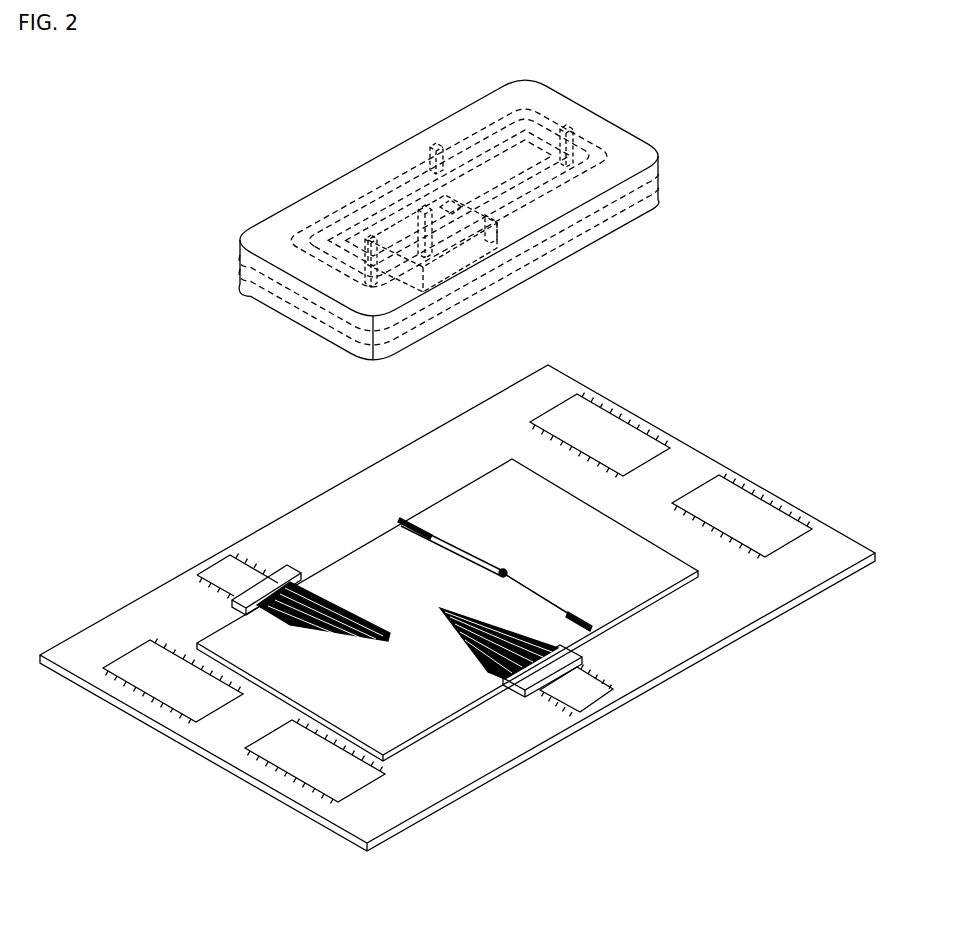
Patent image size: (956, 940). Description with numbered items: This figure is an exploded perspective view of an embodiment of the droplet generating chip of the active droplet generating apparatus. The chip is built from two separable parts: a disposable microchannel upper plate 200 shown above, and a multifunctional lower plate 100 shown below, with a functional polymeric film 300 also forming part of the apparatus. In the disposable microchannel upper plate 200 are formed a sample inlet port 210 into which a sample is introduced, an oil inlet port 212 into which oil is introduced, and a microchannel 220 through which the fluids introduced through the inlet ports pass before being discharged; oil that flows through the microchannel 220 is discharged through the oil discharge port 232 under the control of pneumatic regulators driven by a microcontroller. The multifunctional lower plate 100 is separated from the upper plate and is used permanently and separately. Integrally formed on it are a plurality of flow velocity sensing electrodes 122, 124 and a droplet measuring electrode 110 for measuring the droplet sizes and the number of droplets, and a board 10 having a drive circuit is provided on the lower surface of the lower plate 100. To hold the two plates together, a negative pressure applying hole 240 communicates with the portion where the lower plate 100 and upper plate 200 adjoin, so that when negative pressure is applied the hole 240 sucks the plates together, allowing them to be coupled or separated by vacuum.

The board 10 is at (775, 593).
The multifunctional lower plate 100 is at (585, 638).
The droplet measuring electrode 110 is at (507, 572).
The flow velocity sensing electrode 122 is at (323, 590).
The flow velocity sensing electrode 124 is at (495, 680).
The disposable microchannel upper plate 200 is at (613, 138).
The sample inlet port 210 is at (397, 209).
The oil inlet port 212 is at (423, 216).
The microchannel 220 is at (527, 193).
The oil discharge port 232 is at (569, 131).
The negative pressure applying hole 240 is at (438, 146).
The functional polymeric film 300 is at (622, 224).